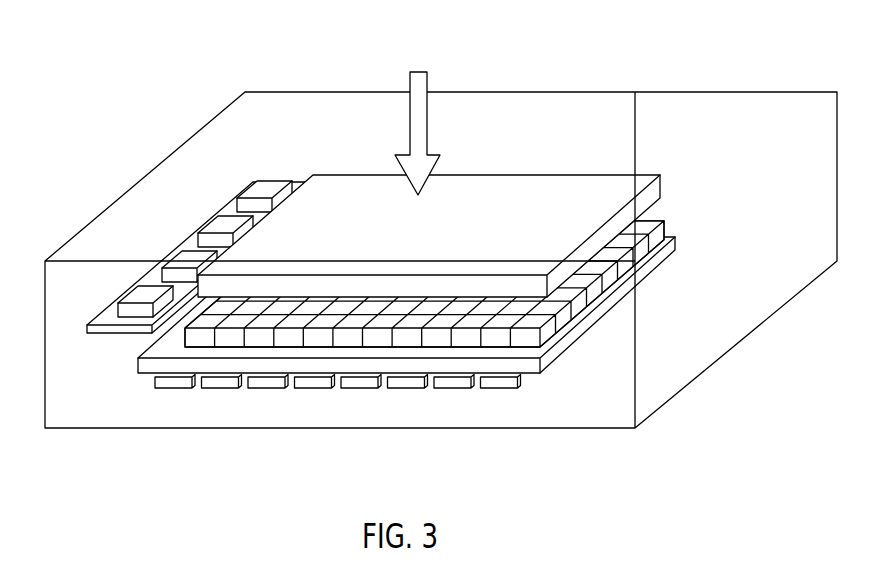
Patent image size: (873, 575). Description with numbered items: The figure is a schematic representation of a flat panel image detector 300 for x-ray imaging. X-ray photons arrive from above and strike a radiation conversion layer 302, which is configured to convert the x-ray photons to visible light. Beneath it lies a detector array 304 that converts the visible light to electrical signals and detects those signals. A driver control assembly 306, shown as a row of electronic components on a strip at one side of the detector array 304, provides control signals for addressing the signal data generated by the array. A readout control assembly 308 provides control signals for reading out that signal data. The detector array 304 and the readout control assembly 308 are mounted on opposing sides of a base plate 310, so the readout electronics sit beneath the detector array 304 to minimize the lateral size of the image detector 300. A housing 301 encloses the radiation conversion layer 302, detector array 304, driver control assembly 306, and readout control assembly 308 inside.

The flat panel image detector 300 is at (434, 232).
The housing 301 is at (797, 92).
The radiation conversion layer 302 is at (553, 175).
The detector array 304 is at (655, 222).
The driver control assembly 306 is at (193, 242).
The readout control assembly 308 is at (153, 379).
The base plate 310 is at (138, 370).